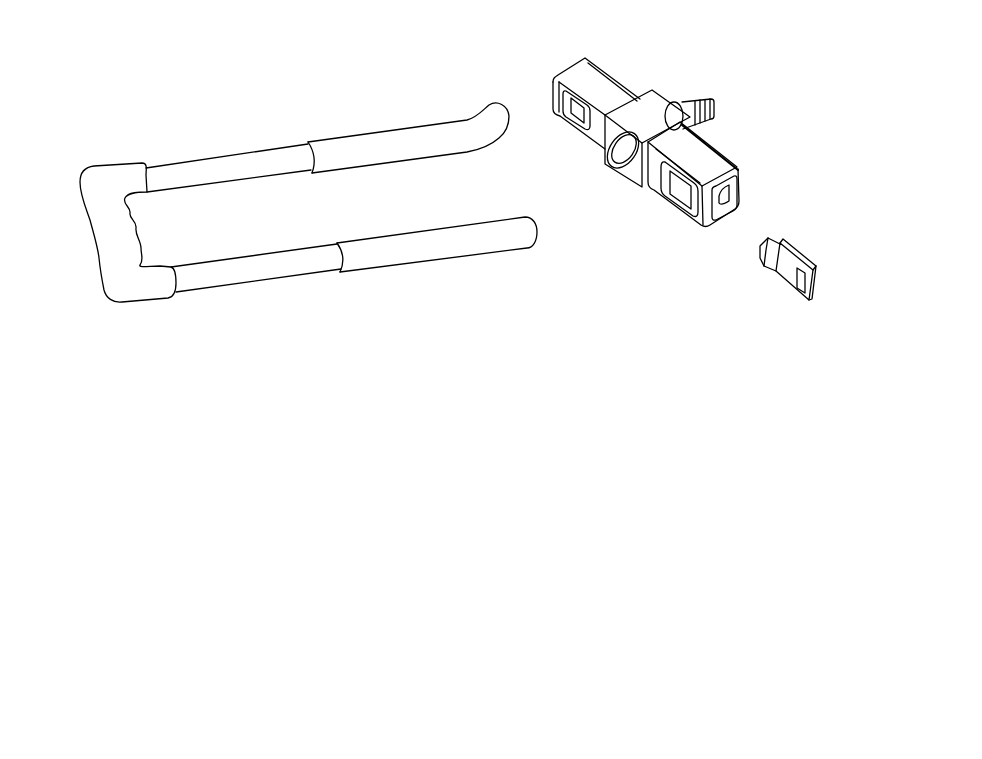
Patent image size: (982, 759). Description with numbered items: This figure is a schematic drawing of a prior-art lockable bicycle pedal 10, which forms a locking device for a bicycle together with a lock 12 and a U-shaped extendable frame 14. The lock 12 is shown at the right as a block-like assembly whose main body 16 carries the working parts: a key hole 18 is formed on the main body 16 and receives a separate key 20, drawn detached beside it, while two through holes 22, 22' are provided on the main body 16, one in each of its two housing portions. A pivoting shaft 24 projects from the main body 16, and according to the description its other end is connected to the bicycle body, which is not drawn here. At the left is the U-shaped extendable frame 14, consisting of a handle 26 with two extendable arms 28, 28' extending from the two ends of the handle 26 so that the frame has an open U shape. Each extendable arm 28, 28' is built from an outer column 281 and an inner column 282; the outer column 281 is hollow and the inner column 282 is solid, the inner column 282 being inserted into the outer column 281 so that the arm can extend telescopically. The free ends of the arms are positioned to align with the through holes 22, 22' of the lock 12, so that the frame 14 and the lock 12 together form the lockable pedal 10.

The lockable pedal 10 is at (371, 78).
The lock 12 is at (685, 238).
The U-shaped extendable frame 14 is at (242, 327).
The main body 16 is at (727, 141).
The key hole 18 is at (733, 198).
The key 20 is at (815, 272).
The through hole 22 is at (653, 190).
The through hole 22' is at (559, 97).
The pivoting shaft 24 is at (713, 99).
The handle 26 is at (105, 183).
The extendable arm 28 is at (363, 283).
The extendable arm 28' is at (327, 136).
The outer column 281 is at (510, 240).
The inner column 282 is at (217, 280).